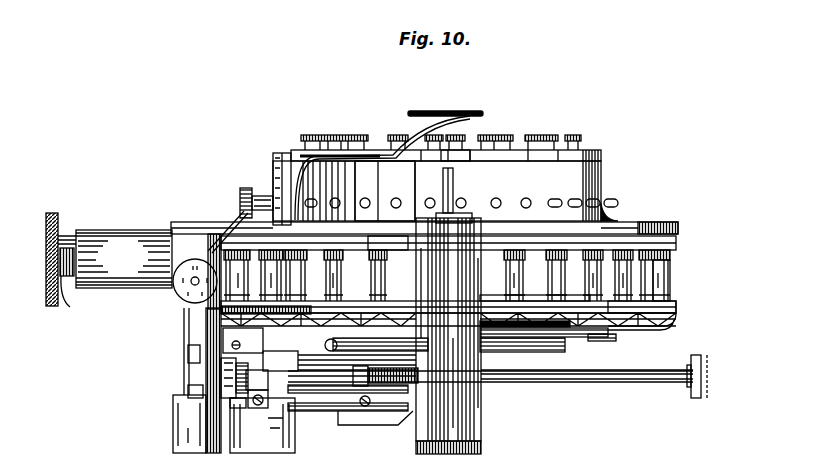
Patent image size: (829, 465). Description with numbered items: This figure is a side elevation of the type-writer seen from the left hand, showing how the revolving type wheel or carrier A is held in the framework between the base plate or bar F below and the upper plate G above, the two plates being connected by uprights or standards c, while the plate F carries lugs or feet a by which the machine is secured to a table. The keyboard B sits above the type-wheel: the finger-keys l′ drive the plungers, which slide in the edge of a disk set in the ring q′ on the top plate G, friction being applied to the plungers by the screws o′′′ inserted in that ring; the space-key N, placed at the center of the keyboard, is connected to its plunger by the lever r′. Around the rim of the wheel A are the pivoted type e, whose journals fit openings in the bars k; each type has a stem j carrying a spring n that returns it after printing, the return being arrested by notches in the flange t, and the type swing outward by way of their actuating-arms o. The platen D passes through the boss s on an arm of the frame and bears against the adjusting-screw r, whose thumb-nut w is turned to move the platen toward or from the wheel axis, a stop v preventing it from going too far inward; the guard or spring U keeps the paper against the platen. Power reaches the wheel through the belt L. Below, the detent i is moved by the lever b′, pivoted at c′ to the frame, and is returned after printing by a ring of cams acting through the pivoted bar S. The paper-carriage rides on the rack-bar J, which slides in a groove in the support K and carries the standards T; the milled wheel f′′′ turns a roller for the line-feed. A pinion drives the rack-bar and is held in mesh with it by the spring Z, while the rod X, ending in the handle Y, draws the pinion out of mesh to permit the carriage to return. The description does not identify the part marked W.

The thumb-nut w is at (53, 248).
The stop v is at (67, 243).
The boss s is at (124, 259).
The adjusting-screw r is at (70, 297).
The milled wheel f′′′ is at (174, 283).
The platen D is at (211, 238).
The guard or spring U is at (225, 228).
The lever r′ is at (292, 147).
The space-key N is at (458, 93).
The keyboard B is at (445, 170).
The ring q′ is at (385, 191).
The finger-keys l′ is at (540, 135).
The screws o′′′ is at (583, 193).
The upper plate G is at (640, 214).
The bars k is at (372, 242).
The pivoted type e is at (290, 251).
The revolving type wheel A is at (442, 280).
The springs n is at (385, 275).
The uprights or standards c is at (448, 304).
The actuating-arms o is at (506, 294).
The stem j is at (556, 252).
The flange t is at (656, 293).
The belt L is at (544, 342).
The detent i is at (207, 306).
The pivoted bar S is at (243, 340).
The standards T is at (200, 348).
The support or bar K is at (182, 380).
The rack-bar J is at (198, 390).
The box W is at (262, 425).
The lever b′ is at (318, 386).
The pivot c′ is at (353, 386).
The spring Z is at (392, 408).
The base plate or bar F is at (490, 378).
The rod X is at (587, 389).
The handle Y is at (708, 376).
The lugs or feet a is at (448, 453).